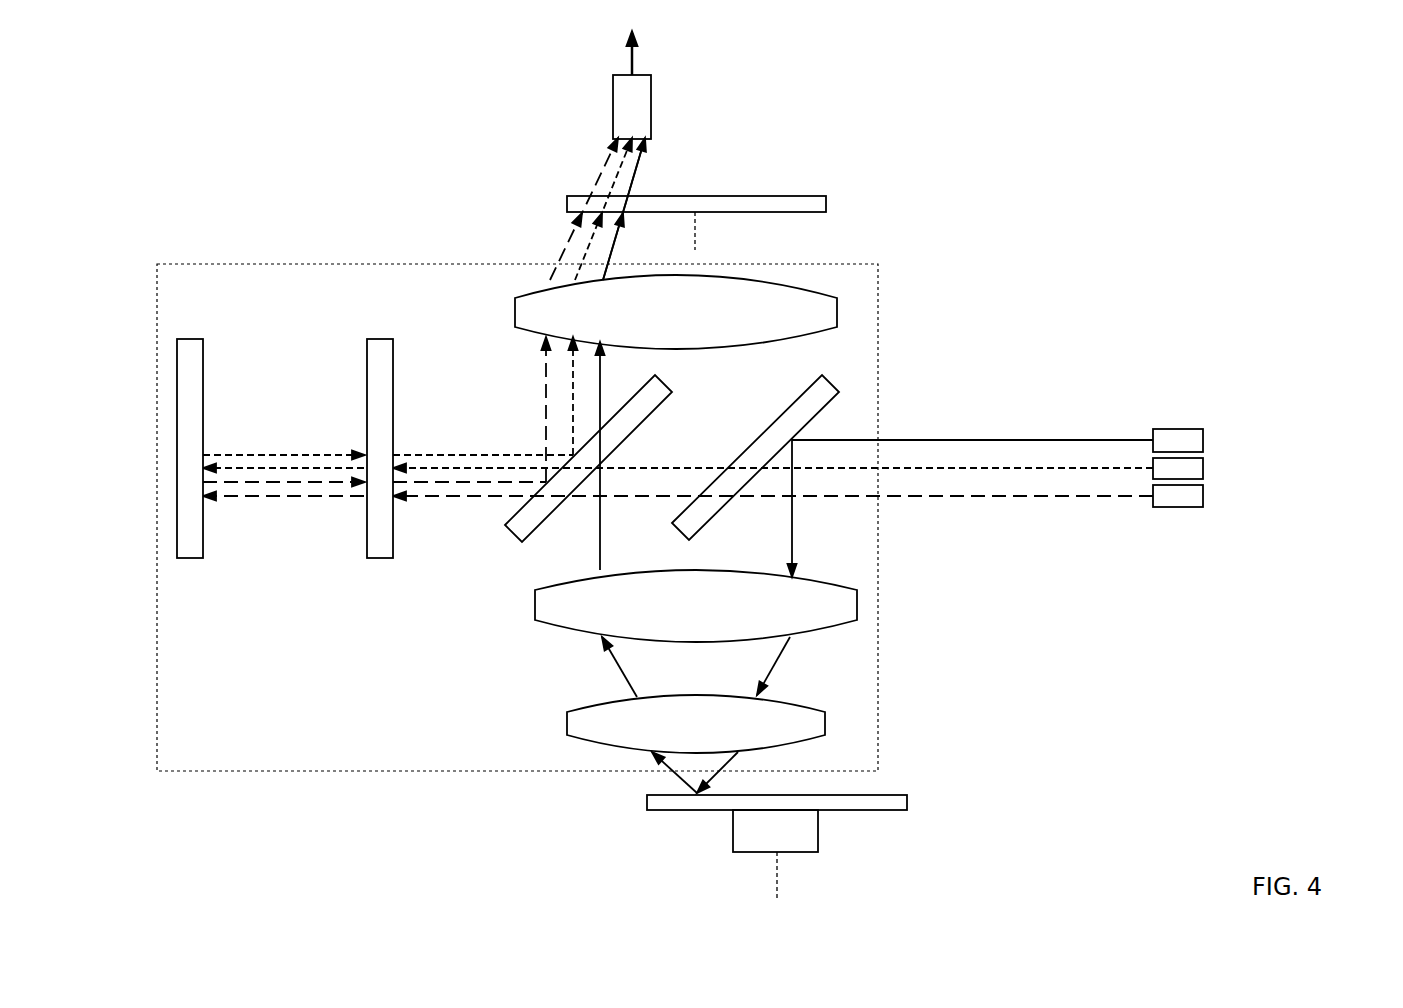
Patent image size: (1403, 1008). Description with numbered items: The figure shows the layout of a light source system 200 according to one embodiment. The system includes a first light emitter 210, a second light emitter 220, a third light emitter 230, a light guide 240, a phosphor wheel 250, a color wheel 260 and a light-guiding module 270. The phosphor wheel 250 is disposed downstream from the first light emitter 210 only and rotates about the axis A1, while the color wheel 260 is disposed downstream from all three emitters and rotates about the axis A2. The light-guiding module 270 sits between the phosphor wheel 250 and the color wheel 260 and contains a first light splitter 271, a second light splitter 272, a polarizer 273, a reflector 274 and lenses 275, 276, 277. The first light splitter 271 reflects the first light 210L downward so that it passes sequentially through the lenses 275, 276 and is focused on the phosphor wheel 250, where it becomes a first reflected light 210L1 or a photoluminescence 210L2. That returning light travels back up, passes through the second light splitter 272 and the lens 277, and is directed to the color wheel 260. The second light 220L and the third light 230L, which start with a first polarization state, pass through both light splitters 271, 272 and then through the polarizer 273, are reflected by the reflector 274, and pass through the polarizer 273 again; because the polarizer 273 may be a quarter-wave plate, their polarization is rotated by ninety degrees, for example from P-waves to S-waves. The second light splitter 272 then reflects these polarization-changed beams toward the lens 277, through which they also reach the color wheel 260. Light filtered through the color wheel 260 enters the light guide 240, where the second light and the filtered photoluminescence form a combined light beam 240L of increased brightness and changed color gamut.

The light source system 200 is at (92, 45).
The first light emitter 210 is at (1203, 440).
The second light emitter 220 is at (1203, 468).
The third light emitter 230 is at (1203, 496).
The light guide 240 is at (651, 105).
The phosphor wheel 250 is at (907, 802).
The color wheel 260 is at (826, 204).
The light-guiding module 270 is at (195, 772).
The first light splitter 271 is at (777, 417).
The second light splitter 272 is at (668, 384).
The polarizer 273 is at (382, 339).
The reflector 274 is at (190, 339).
The lens 275 is at (535, 604).
The lens 276 is at (567, 722).
The lens 277 is at (515, 313).
The first light 210L is at (975, 440).
The first reflected light 210L1 is at (681, 778).
The photoluminescence 210L2 is at (608, 257).
The second light 220L is at (438, 465).
The third light 230L is at (427, 498).
The combined light beam 240L is at (634, 58).
The axis A1 is at (797, 877).
The axis A2 is at (717, 234).